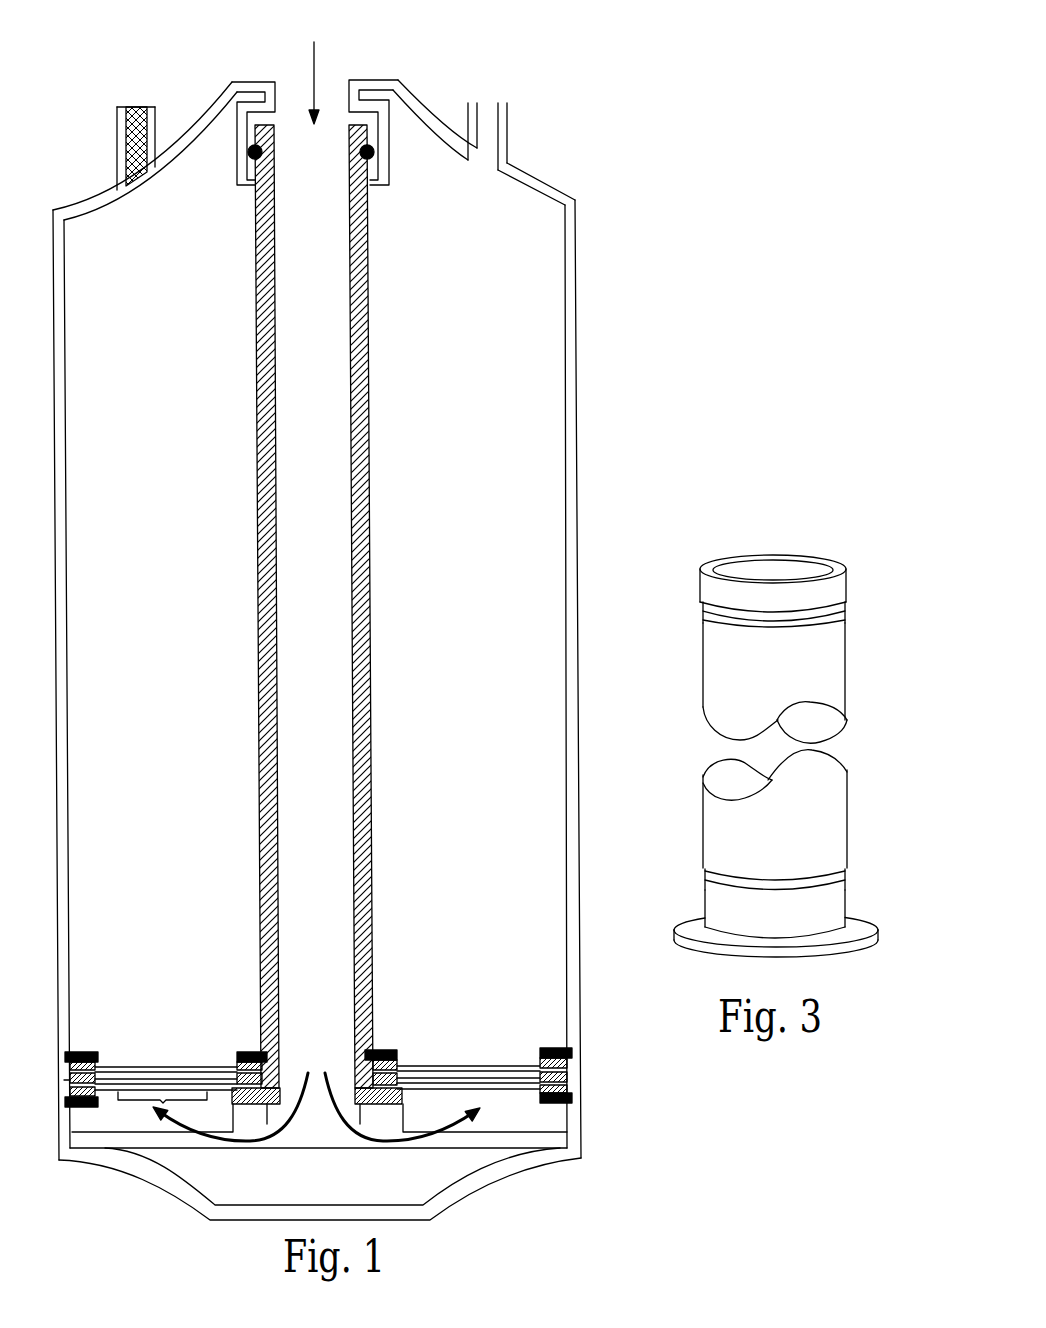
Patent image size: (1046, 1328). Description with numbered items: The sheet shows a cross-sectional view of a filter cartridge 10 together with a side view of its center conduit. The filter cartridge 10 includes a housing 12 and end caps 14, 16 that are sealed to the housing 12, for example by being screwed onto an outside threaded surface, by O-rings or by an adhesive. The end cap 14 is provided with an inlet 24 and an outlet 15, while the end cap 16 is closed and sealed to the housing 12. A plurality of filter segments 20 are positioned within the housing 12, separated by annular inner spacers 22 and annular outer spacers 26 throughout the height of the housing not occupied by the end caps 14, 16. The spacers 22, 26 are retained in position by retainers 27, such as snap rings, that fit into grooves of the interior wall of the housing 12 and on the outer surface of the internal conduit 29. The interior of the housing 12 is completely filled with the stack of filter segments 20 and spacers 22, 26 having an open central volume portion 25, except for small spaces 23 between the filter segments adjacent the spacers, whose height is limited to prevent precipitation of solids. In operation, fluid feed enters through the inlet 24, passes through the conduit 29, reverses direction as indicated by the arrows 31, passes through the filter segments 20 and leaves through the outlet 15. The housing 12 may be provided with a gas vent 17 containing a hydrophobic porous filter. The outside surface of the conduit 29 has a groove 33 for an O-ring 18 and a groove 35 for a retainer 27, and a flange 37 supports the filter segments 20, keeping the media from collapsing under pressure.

In FIG. 1, the filter cartridge 10 is at (358, 150).
In FIG. 1, the housing 12 is at (348, 680).
In FIG. 1, the end cap 14 is at (360, 96).
In FIG. 1, the outlet 15 is at (517, 115).
In FIG. 1, the end cap 16 is at (320, 1192).
In FIG. 1, the gas vent 17 is at (106, 142).
In FIG. 1, the O-ring 18 is at (280, 79).
In FIG. 1, the filter segments 20 is at (317, 1030).
In FIG. 1, the annular inner spacers 22 is at (319, 1027).
In FIG. 1, the spaces 23 is at (75, 1143).
In FIG. 1, the inlet 24 is at (366, 62).
In FIG. 1, the open central volume portion 25 is at (204, 1146).
In FIG. 1, the annular outer spacers 26 is at (318, 1029).
In FIG. 1, the retainers 27 is at (348, 1030).
In FIG. 1, the internal conduit 29 is at (349, 606).
In FIG. 3, the internal conduit 29 is at (752, 745).
In FIG. 1, the arrows 31 is at (457, 1141).
In FIG. 3, the groove 33 is at (788, 558).
In FIG. 3, the groove 35 is at (799, 887).
In FIG. 1, the flange 37 is at (293, 1182).
In FIG. 3, the flange 37 is at (741, 901).